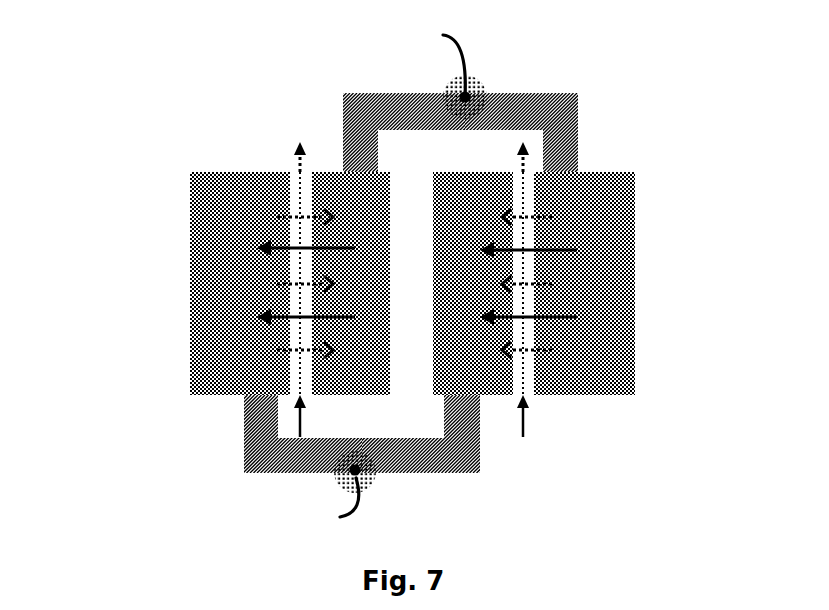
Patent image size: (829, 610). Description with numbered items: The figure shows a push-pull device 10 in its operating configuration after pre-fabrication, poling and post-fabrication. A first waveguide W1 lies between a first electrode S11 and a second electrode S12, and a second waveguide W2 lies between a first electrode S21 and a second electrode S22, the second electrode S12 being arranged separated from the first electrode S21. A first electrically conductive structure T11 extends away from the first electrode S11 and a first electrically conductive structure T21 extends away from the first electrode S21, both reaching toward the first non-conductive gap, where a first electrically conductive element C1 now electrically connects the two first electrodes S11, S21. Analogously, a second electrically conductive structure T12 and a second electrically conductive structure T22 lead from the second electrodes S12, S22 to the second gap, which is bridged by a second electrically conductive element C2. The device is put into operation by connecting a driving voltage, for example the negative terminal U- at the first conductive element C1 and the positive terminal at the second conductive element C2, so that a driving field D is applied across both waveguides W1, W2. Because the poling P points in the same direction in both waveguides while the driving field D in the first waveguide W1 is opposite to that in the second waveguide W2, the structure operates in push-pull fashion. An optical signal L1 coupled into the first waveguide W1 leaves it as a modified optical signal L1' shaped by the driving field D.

The push-pull device 10 is at (50, 131).
The first electrode of the first waveguide S11 is at (200, 183).
The second electrode of the first waveguide S12 is at (320, 182).
The first electrode of the second waveguide S21 is at (488, 383).
The second electrode of the second waveguide S22 is at (620, 383).
The first waveguide W1 is at (298, 183).
The second waveguide W2 is at (523, 378).
The first electrically conductive structure of the first waveguide T11 is at (300, 460).
The second electrically conductive structure of the first waveguide T12 is at (400, 105).
The first electrically conductive structure of the second waveguide T21 is at (410, 460).
The second electrically conductive structure of the second waveguide T22 is at (570, 138).
The first electrically conductive element C1 is at (358, 487).
The second electrically conductive element C2 is at (478, 82).
The driving voltage U- is at (328, 502).
The driving field D is at (305, 312).
The poling P is at (290, 350).
The optical signal L1 is at (210, 439).
The modified optical signal L1' is at (258, 89).